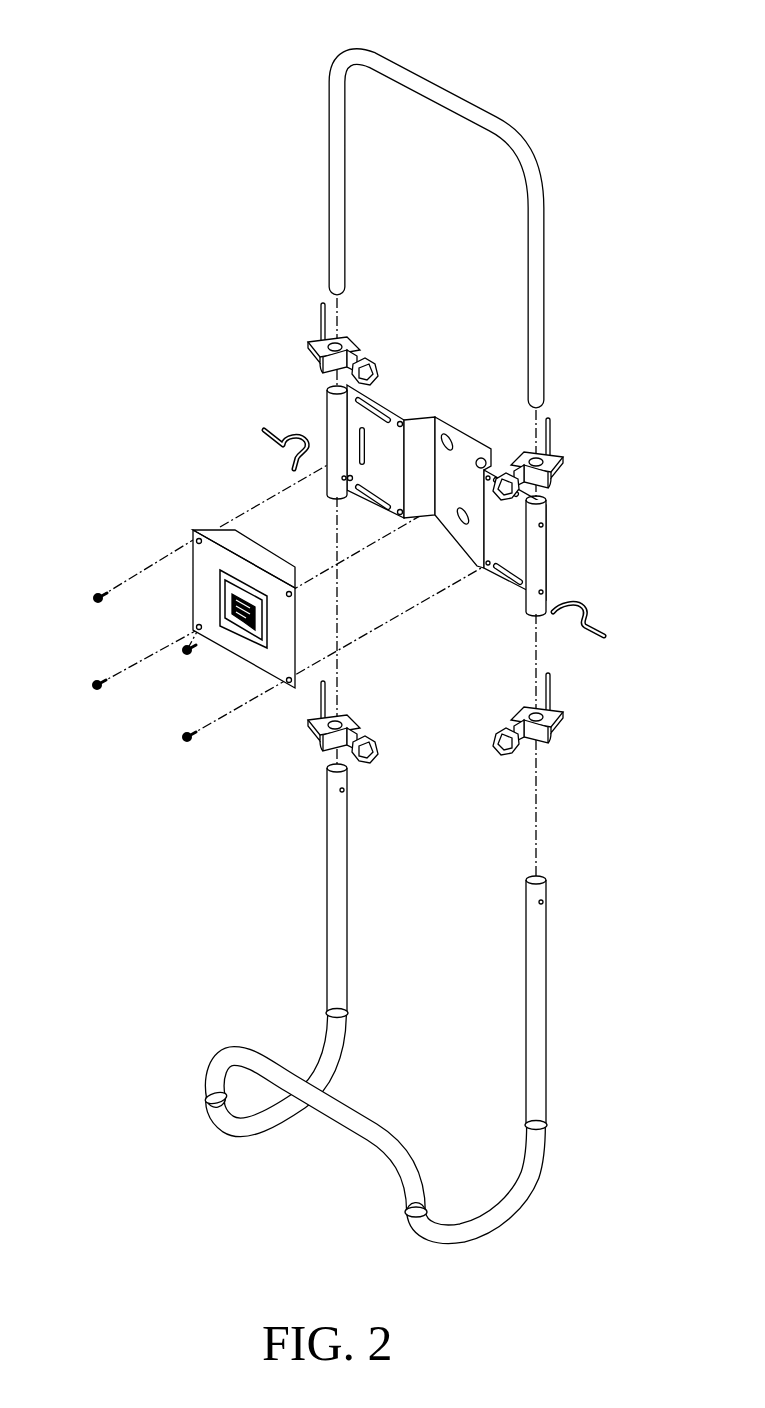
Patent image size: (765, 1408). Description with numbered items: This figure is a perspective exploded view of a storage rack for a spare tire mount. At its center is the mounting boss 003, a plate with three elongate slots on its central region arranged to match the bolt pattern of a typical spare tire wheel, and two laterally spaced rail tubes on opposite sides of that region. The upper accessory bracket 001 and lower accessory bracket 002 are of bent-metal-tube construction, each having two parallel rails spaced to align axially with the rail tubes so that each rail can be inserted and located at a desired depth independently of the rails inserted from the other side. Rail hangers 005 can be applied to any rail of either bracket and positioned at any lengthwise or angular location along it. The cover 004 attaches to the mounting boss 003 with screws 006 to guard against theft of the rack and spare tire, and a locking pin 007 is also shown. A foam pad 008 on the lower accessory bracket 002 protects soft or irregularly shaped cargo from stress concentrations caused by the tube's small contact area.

The upper accessory bracket 001 is at (345, 48).
The lower accessory bracket 002 is at (210, 1046).
The mounting boss 003 is at (440, 424).
The cover 004 is at (193, 530).
The rail hanger 005 is at (315, 340).
The screw 006 is at (96, 595).
The locking pin 007 is at (266, 431).
The foam pad 008 is at (490, 1196).